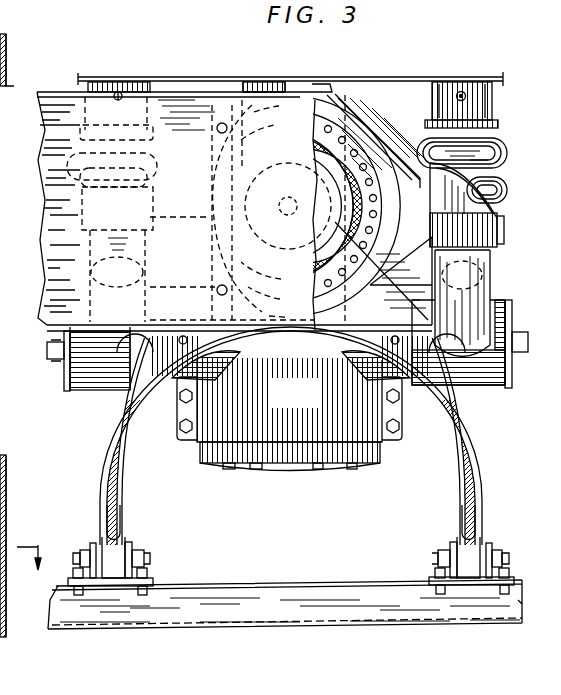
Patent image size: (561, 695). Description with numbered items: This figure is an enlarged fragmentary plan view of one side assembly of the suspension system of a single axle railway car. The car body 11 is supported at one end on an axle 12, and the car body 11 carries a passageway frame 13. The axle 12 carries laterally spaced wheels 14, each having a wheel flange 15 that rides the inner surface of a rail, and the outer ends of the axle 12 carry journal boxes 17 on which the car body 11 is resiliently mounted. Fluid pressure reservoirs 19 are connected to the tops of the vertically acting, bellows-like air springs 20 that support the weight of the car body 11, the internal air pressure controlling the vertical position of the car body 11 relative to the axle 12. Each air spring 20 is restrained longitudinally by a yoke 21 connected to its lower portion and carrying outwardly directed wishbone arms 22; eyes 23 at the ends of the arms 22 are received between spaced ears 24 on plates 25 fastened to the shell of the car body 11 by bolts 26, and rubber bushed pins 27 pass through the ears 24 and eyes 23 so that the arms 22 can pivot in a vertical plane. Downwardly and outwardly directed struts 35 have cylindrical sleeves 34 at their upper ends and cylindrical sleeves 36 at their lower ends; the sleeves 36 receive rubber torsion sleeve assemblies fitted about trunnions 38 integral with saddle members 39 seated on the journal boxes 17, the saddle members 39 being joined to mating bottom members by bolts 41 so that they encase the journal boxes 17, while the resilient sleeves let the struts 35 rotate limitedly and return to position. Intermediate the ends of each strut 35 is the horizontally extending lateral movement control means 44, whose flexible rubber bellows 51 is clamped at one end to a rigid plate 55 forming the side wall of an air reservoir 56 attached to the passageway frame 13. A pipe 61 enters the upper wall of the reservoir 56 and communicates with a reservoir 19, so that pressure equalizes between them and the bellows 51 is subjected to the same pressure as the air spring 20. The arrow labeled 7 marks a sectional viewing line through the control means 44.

The section line 7 is at (30, 548).
The car body 11 is at (308, 615).
The axle 12 is at (258, 80).
The passageway frame 13 is at (4, 64).
The wheels 14 is at (480, 257).
The wheel flanges 15 is at (487, 195).
The journal boxes 17 is at (214, 463).
The fluid pressure reservoirs 19 is at (172, 100).
The springs 20 is at (316, 157).
The yokes 21 is at (317, 100).
The restraining links or arms 22 is at (101, 494).
The eyes 23 is at (117, 541).
The ears 24 is at (93, 543).
The plates 25 is at (155, 581).
The bolts 26 is at (76, 572).
The rubber bushed bolts or pins 27 is at (83, 551).
The cylindrical sleeves 34 is at (47, 163).
The struts 35 is at (93, 303).
The cylindrical sleeves 36 is at (105, 388).
The trunnions 38 is at (208, 373).
The saddle members 39 is at (302, 402).
The bolts 41 is at (181, 426).
The lateral movement control means 44 is at (64, 145).
The flexible rubber bellows 51 is at (419, 162).
The rigid plate 55 is at (498, 127).
The air reservoir 56 is at (118, 88).
The tube or pipe 61 is at (124, 85).